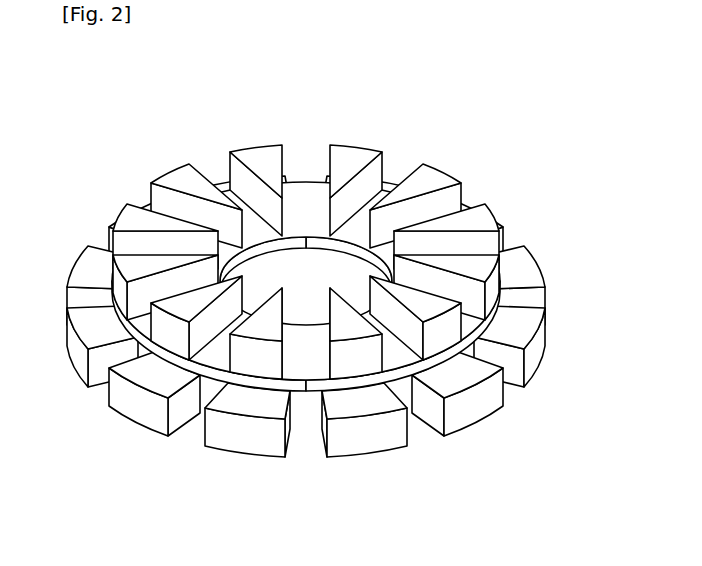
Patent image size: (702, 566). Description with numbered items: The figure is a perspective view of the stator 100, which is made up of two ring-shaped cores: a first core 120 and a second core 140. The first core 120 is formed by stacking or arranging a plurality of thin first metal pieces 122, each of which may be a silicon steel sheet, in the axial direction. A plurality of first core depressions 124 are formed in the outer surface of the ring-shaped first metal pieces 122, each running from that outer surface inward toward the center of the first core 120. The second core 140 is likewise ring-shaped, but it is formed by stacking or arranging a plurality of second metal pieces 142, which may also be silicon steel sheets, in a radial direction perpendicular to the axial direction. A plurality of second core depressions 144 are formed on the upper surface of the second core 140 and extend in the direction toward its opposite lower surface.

The stator 100 is at (203, 123).
The first core 120 is at (326, 354).
The first metal pieces 122 is at (365, 447).
The first core depressions 124 is at (413, 431).
The second core 140 is at (339, 226).
The second metal pieces 142 is at (437, 200).
The second core depressions 144 is at (348, 150).